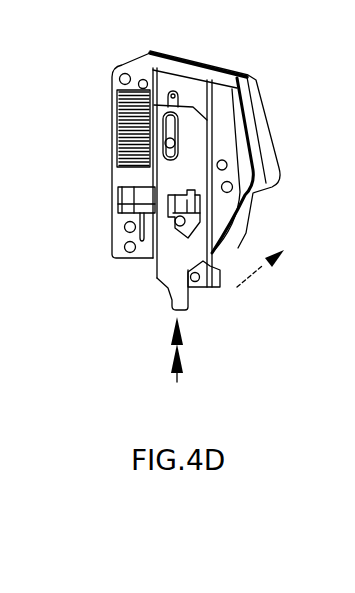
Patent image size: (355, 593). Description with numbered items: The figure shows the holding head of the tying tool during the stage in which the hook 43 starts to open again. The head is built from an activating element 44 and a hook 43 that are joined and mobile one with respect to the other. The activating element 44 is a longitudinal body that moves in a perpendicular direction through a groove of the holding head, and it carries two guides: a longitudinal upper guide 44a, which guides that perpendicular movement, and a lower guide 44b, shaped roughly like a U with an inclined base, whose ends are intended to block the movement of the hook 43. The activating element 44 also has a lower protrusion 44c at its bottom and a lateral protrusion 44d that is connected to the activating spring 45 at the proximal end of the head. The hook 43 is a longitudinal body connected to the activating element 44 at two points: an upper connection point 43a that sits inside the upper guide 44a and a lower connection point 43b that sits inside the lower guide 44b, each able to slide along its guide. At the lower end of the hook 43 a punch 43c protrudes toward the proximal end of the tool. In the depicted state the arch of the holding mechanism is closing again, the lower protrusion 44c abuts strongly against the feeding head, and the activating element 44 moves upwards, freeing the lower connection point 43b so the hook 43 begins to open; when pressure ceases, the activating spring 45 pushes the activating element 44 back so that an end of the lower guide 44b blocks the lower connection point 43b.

The hook 43 is at (207, 273).
The upper connection point 43a is at (170, 142).
The lower connection point 43b is at (200, 228).
The punch 43c is at (215, 282).
The activating element 44 is at (170, 249).
The longitudinal upper guide 44a is at (175, 97).
The lower guide 44b is at (120, 204).
The lower protrusion 44c is at (172, 293).
The lateral protrusion 44d is at (130, 182).
The activating spring 45 is at (117, 131).